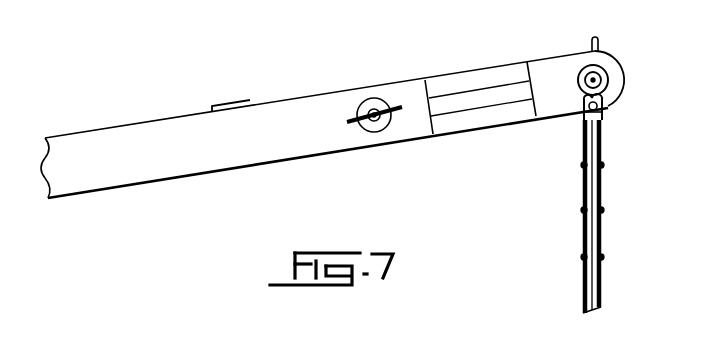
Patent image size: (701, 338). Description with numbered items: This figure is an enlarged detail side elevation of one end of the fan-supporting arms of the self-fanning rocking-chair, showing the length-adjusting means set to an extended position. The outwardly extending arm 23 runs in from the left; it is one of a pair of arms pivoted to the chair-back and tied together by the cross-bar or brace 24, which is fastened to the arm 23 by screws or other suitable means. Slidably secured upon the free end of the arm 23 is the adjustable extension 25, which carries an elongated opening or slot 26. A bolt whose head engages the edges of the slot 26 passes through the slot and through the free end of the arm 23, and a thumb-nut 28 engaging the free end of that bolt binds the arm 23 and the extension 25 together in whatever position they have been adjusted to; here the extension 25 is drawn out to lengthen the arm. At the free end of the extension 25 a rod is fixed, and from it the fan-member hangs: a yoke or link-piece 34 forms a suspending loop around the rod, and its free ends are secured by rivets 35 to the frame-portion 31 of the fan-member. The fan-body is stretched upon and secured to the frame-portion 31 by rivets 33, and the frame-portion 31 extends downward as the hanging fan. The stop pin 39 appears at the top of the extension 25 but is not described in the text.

The outwardly extending arm 23 is at (171, 128).
The cross-bar or brace 24 is at (242, 103).
The adjustable extension 25 is at (608, 67).
The elongated opening or slot 26 is at (468, 103).
The thumb-nut 28 is at (373, 120).
The frame-portion 31 is at (587, 143).
The rivets 33 is at (603, 212).
The yoke or link-piece 34 is at (605, 122).
The rivets 35 is at (607, 110).
The stop pin 39 is at (600, 33).